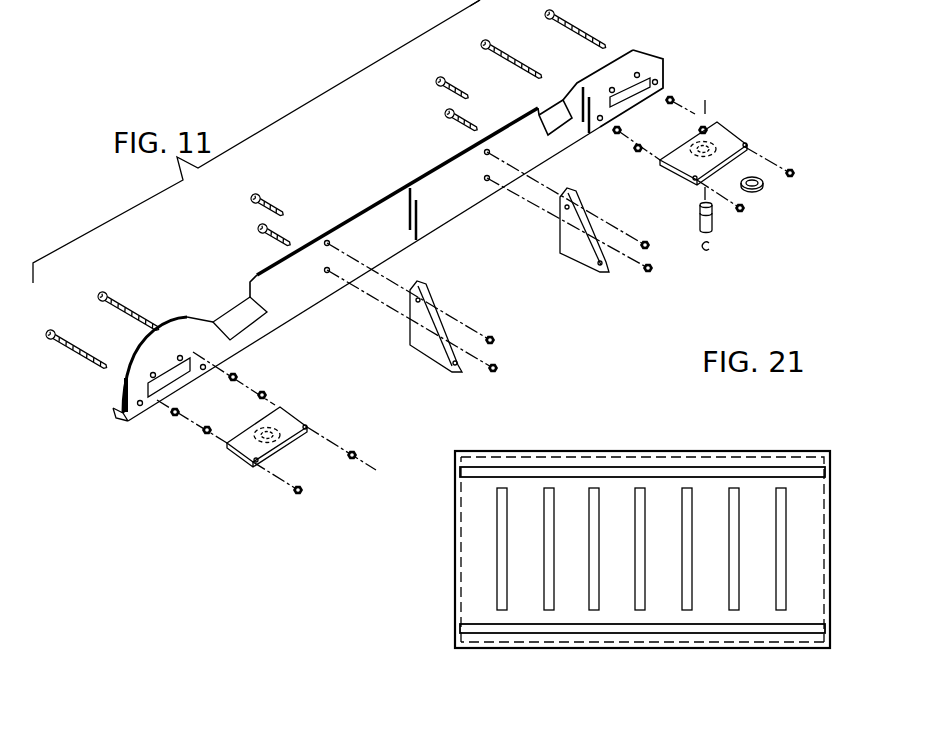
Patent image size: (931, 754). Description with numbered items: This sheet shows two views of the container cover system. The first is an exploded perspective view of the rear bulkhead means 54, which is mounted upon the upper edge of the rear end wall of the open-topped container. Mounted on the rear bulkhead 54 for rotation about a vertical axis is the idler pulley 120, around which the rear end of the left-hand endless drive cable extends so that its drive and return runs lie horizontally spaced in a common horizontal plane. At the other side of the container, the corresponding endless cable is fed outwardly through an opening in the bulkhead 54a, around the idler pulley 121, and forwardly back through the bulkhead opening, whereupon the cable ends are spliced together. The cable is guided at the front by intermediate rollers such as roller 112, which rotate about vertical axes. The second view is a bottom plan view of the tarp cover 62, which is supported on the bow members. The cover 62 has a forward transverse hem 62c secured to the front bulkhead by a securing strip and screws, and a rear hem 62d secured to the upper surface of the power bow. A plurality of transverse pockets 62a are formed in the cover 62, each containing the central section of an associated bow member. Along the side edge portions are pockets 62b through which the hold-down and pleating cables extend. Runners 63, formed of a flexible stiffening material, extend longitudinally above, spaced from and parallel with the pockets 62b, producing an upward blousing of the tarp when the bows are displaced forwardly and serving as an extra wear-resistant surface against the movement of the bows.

In FIG. 11, the intermediate roller 112 is at (251, 0).
In FIG. 11, the rear bulkhead means 54 is at (375, 203).
In FIG. 11, the bulkhead 54a is at (650, 55).
In FIG. 11, the idler pulley 121 is at (732, 133).
In FIG. 11, the idler pulley 120 is at (292, 422).
In FIG. 21, the tarp cover 62 is at (645, 452).
In FIG. 21, the runners 63 is at (749, 474).
In FIG. 21, the transverse pocket 62a is at (781, 521).
In FIG. 21, the pocket 62b is at (778, 646).
In FIG. 21, the forward transverse hem 62c is at (455, 568).
In FIG. 21, the rear hem 62d is at (826, 558).